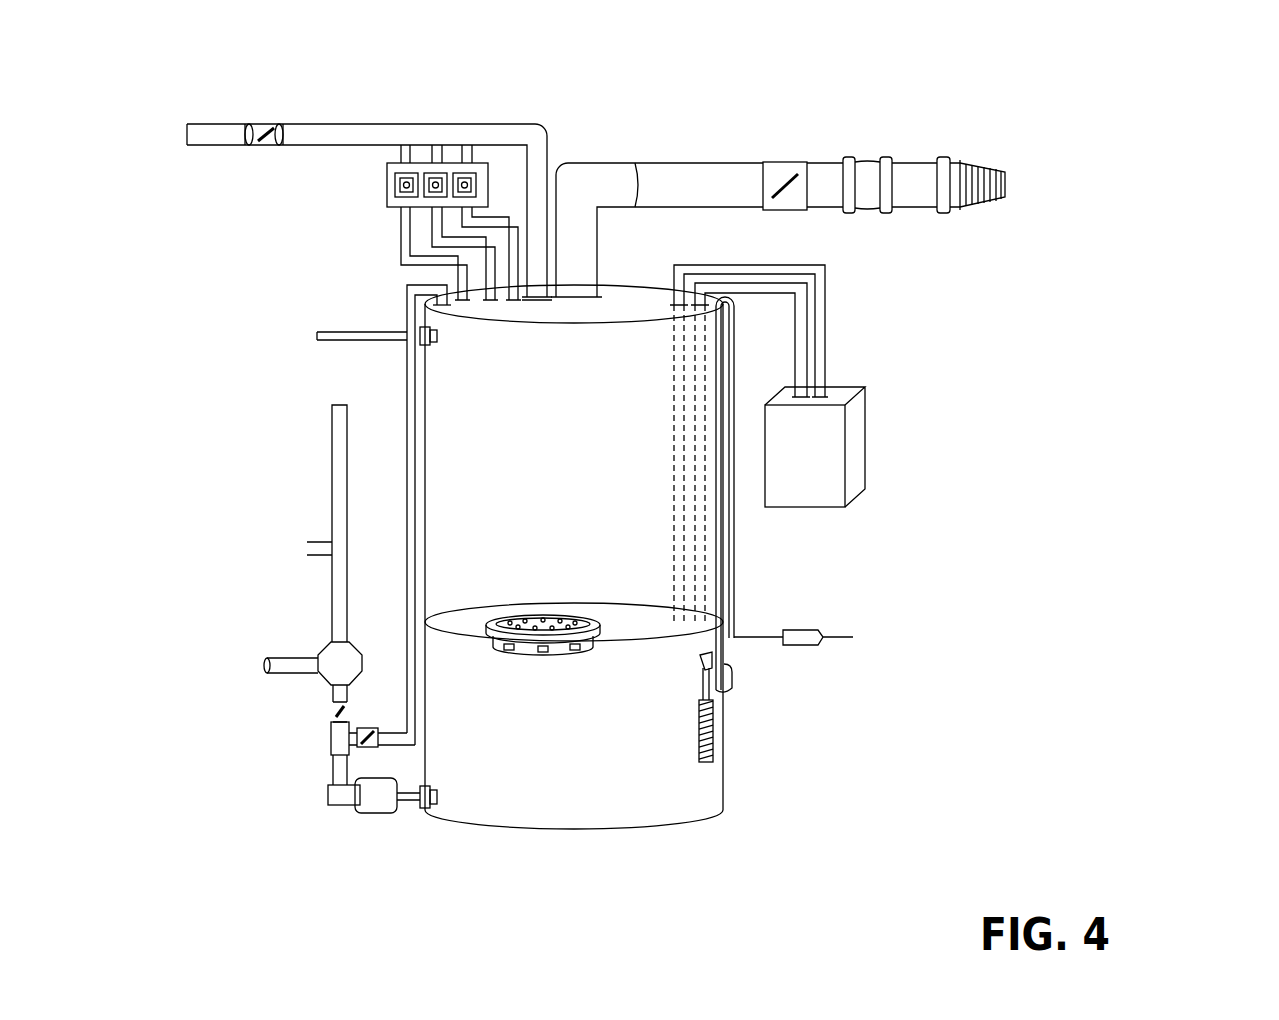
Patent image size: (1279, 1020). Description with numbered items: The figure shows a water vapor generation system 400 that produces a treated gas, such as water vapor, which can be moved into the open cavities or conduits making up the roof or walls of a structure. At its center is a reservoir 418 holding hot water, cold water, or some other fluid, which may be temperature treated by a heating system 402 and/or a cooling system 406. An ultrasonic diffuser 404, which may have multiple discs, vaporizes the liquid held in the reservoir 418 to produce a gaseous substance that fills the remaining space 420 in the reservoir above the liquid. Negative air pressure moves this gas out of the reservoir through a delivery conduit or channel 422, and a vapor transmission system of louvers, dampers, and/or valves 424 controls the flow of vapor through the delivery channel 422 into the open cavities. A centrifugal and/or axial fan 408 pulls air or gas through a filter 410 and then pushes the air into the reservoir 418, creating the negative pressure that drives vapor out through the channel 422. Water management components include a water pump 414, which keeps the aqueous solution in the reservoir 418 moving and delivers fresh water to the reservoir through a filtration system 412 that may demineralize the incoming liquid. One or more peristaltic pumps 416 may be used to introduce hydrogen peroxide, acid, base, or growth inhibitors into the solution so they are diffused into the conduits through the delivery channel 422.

The water vapor generation system 400 is at (1228, 108).
The heating system 402 is at (713, 733).
The ultrasonic diffuser 404 is at (515, 615).
The cooling system 406 is at (865, 456).
The centrifugal and/or axial fan 408 is at (865, 213).
The filter 410 is at (1005, 197).
The filtration system 412 is at (318, 678).
The water pump 414 is at (370, 813).
The peristaltic pump 416 is at (387, 200).
The reservoir 418 is at (690, 826).
The remaining space 420 is at (467, 396).
The delivery conduit or channel 422 is at (228, 145).
The louvers, dampers, and/or valves 424 is at (260, 145).